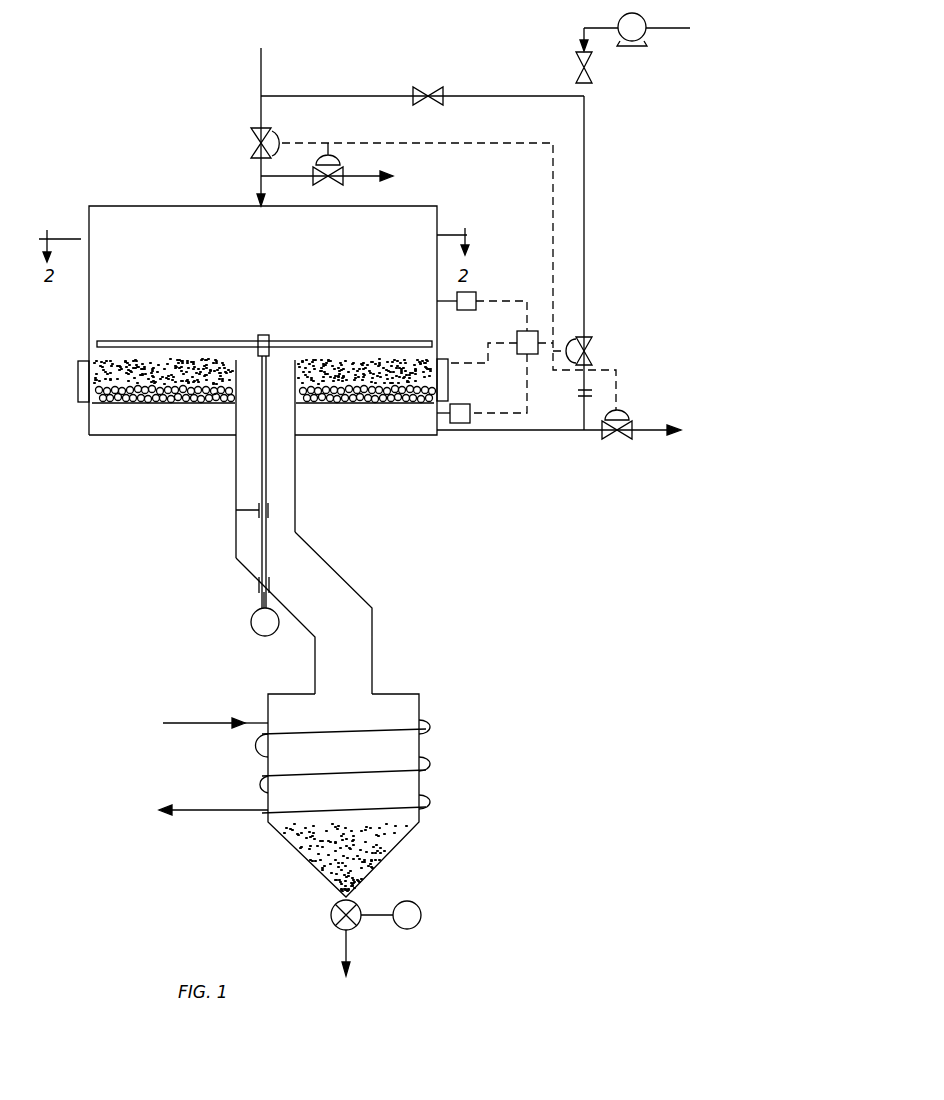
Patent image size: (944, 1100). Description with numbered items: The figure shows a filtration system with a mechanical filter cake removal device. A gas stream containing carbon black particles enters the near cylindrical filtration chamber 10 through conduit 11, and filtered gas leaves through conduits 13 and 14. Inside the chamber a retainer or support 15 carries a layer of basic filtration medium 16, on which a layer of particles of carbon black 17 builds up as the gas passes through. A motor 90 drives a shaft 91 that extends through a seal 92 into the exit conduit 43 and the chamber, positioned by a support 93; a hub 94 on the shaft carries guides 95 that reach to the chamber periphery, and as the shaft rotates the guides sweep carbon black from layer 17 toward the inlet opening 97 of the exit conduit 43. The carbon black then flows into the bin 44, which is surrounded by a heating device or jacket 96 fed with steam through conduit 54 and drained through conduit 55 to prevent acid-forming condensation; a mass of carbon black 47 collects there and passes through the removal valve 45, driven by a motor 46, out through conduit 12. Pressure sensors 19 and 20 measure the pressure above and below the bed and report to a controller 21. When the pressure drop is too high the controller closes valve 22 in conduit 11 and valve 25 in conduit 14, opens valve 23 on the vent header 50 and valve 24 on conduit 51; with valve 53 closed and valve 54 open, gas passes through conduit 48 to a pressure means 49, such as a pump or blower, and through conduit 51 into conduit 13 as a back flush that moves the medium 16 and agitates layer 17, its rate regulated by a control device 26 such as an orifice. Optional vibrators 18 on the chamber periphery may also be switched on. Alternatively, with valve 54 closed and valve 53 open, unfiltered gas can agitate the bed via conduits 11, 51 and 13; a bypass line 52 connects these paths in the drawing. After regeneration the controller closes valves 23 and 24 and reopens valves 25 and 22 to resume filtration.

The filtration chamber 10 is at (89, 222).
The conduit 11 is at (262, 64).
The conduit 12 is at (347, 944).
The conduit 13 is at (552, 430).
The conduit 14 is at (660, 432).
The retainer 15 is at (112, 403).
The basic filtration medium 16 is at (100, 392).
The layer of particles of carbon black 17 is at (97, 360).
The vibrators 18 is at (78, 379).
The pressure sensor 19 is at (476, 295).
The pressure sensor 20 is at (470, 410).
The controller 21 is at (524, 331).
The valve 22 is at (278, 138).
The valve 23 is at (342, 175).
The valve 24 is at (590, 344).
The valve 25 is at (626, 416).
The control device 26 is at (578, 393).
The exit conduit 43 is at (346, 585).
The bin 44 is at (419, 694).
The removal valve 45 is at (331, 915).
The motor 46 is at (421, 908).
The mass of carbon black 47 is at (392, 850).
The conduit 48 is at (660, 30).
The pressure means 49 is at (622, 16).
The vent header 50 is at (385, 178).
The conduit 51 is at (584, 210).
The bypass line 52 is at (338, 96).
The valve 53 is at (420, 88).
The valve 54 is at (590, 80).
The conduit 55 is at (178, 809).
The motor 90 is at (251, 622).
The shaft 91 is at (262, 602).
The seal 92 is at (259, 585).
The support 93 is at (245, 512).
The hub 94 is at (269, 336).
The guides 95 is at (182, 341).
The heating device 96 is at (430, 766).
The inlet opening 97 is at (280, 366).